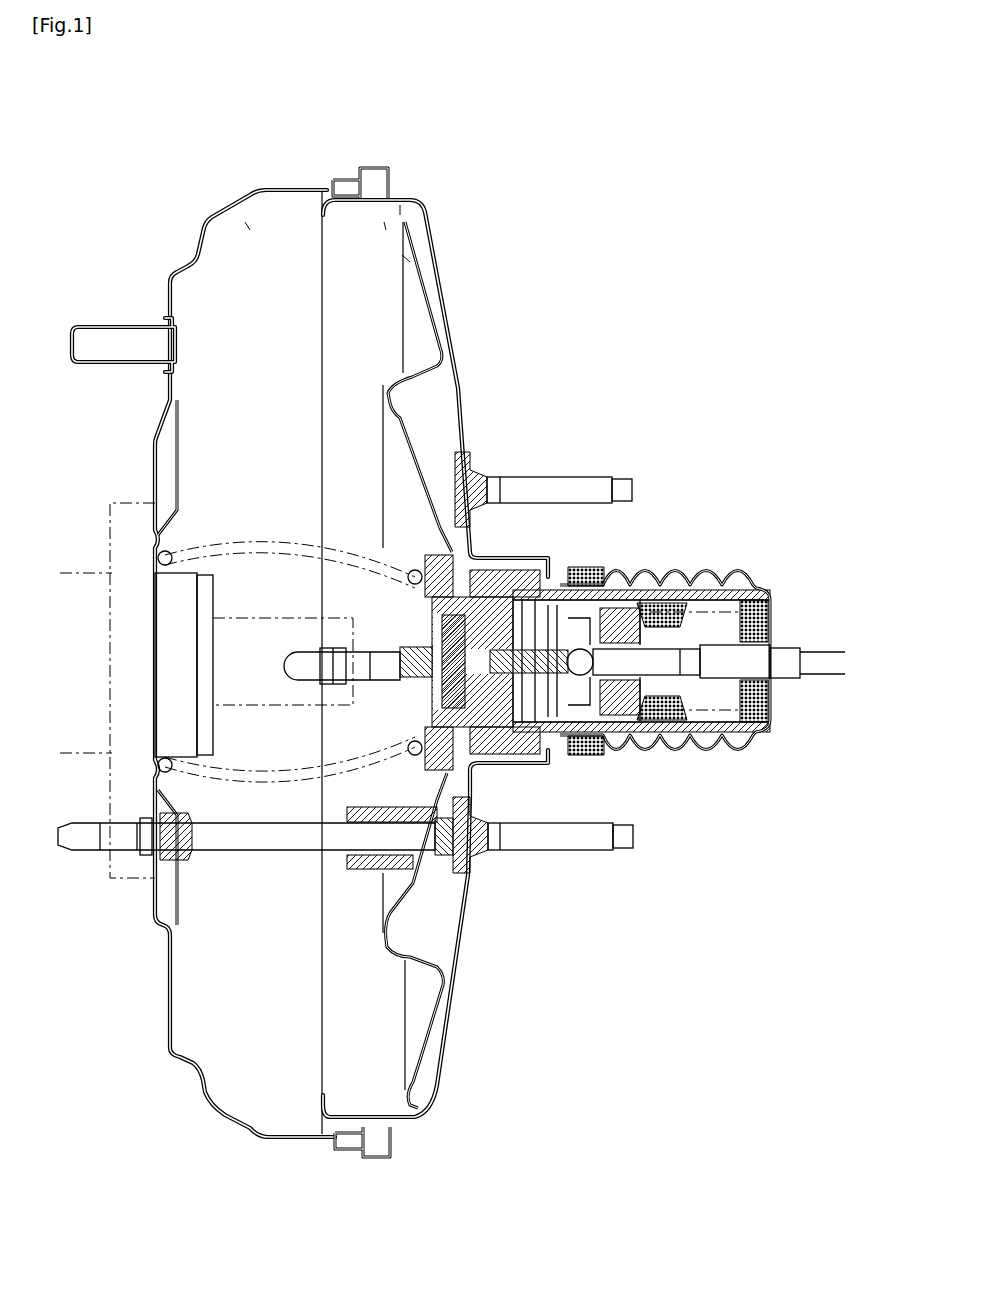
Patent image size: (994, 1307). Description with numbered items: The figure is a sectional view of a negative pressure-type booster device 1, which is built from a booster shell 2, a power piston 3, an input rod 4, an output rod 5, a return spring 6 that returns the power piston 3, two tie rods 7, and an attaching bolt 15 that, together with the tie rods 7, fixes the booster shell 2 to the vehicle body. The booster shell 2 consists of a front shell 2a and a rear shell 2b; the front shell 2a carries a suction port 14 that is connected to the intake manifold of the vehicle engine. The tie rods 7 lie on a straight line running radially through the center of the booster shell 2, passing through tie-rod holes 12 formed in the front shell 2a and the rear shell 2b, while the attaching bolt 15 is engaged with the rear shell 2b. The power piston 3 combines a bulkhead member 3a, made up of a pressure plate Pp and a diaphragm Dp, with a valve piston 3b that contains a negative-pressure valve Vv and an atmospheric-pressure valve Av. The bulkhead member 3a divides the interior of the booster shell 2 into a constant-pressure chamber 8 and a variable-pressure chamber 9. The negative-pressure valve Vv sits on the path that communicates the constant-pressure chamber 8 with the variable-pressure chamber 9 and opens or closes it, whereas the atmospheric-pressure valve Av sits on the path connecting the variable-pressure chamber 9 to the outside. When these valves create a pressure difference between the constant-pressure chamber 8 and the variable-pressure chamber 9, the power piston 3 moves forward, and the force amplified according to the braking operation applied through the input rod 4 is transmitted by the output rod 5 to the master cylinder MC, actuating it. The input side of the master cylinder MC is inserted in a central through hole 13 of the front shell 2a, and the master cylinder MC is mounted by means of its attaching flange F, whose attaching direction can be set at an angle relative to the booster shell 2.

The negative pressure-type booster device 1 is at (458, 295).
The booster shell 2 is at (297, 190).
The front shell 2a is at (207, 216).
The rear shell 2b is at (453, 338).
The power piston 3 is at (412, 440).
The bulkhead member 3a is at (482, 103).
The valve piston 3b is at (727, 757).
The input rod 4 is at (752, 652).
The output rod 5 is at (405, 642).
The return spring 6 is at (222, 548).
The tie rods 7 is at (550, 838).
The constant-pressure chamber 8 is at (248, 222).
The variable-pressure chamber 9 is at (437, 267).
The tie-rod holes 12 is at (133, 872).
The through hole 13 is at (153, 748).
The suction port 14 is at (108, 327).
The attaching bolt 15 is at (558, 485).
The diaphragm Dp is at (405, 256).
The pressure plate Pp is at (384, 222).
The negative-pressure valve Vv is at (632, 590).
The atmospheric-pressure valve Av is at (620, 755).
The master cylinder MC is at (92, 573).
The attaching flange F is at (114, 863).